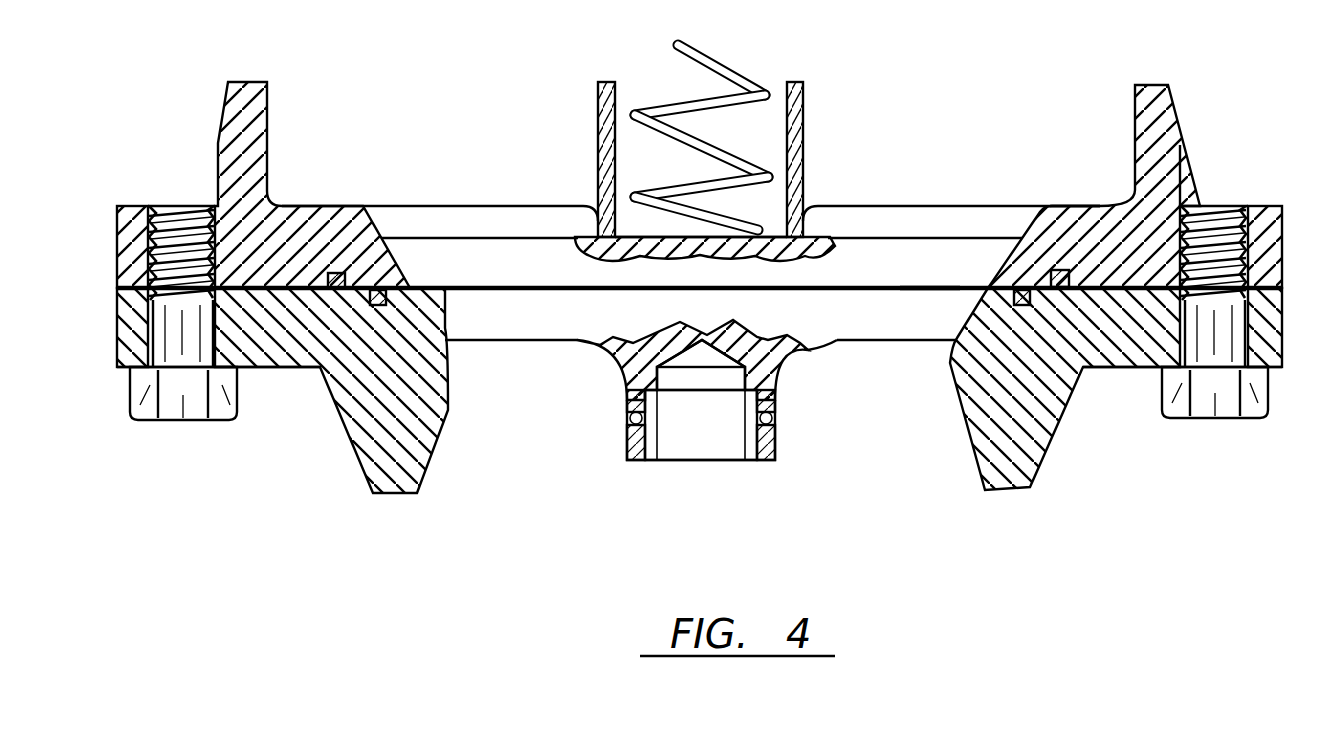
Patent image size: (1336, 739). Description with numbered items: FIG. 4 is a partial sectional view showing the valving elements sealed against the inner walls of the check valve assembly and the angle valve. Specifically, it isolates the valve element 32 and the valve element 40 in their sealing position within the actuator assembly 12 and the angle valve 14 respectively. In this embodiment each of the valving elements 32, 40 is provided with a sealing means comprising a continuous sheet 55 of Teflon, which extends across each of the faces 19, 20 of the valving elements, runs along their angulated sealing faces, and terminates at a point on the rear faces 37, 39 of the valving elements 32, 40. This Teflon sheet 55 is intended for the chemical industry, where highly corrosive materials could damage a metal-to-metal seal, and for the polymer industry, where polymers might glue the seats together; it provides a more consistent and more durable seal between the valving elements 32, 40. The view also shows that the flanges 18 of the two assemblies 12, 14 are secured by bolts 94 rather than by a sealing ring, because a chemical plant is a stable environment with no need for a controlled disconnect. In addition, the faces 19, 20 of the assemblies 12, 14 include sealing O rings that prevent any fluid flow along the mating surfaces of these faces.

The actuator assembly 12 is at (1052, 137).
The angle valve 14 is at (1058, 442).
The flanges 18 is at (127, 215).
The face 19 is at (283, 290).
The face 20 is at (283, 290).
The valve element 32 is at (517, 258).
The rear face 37 is at (493, 236).
The rear face 39 is at (858, 343).
The valve element 40 is at (518, 312).
The sheet of Teflon 55 is at (924, 292).
The bolts 94 is at (206, 420).